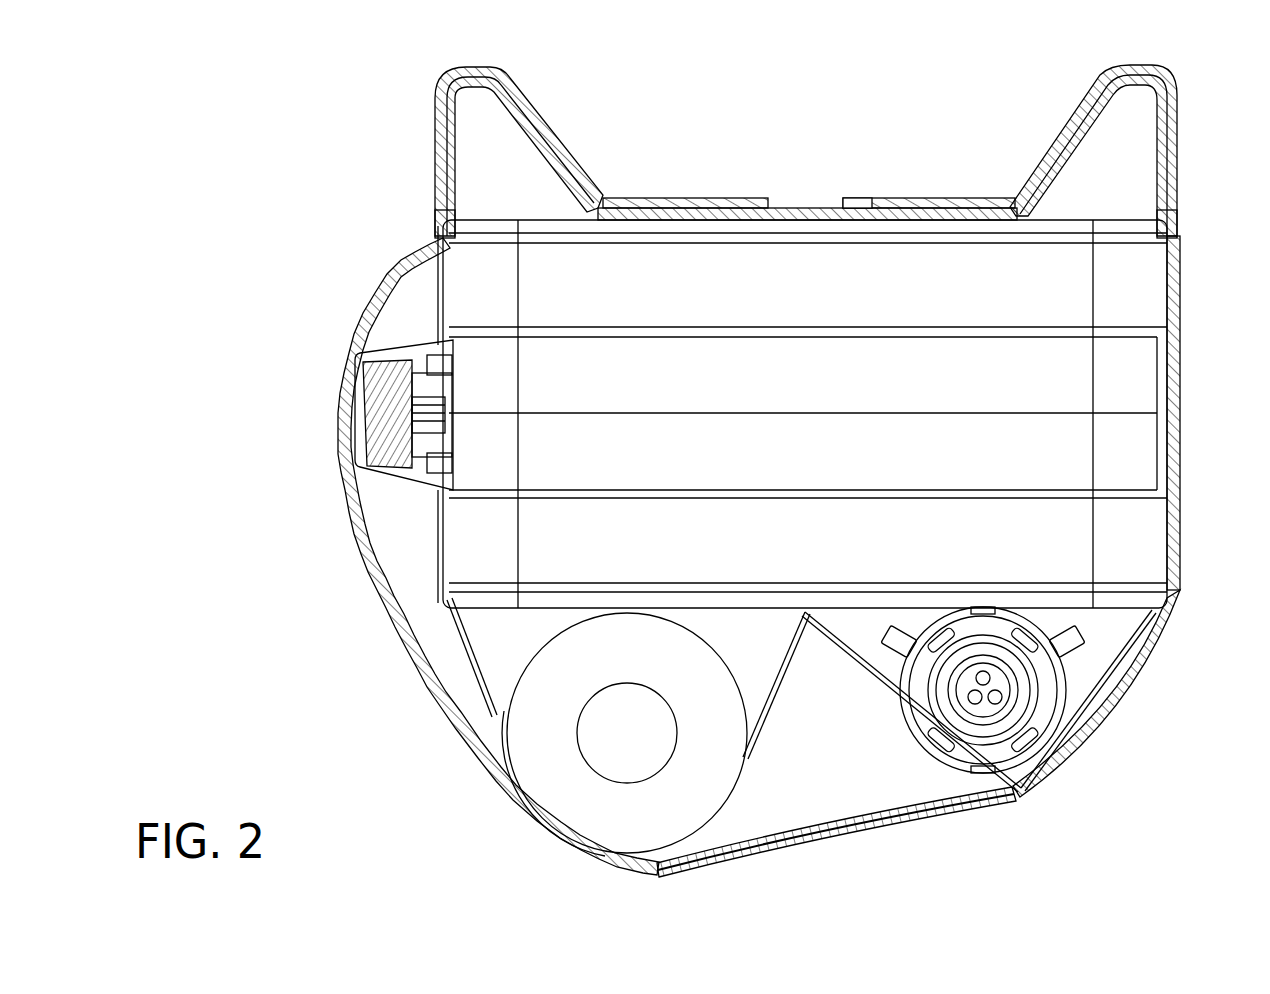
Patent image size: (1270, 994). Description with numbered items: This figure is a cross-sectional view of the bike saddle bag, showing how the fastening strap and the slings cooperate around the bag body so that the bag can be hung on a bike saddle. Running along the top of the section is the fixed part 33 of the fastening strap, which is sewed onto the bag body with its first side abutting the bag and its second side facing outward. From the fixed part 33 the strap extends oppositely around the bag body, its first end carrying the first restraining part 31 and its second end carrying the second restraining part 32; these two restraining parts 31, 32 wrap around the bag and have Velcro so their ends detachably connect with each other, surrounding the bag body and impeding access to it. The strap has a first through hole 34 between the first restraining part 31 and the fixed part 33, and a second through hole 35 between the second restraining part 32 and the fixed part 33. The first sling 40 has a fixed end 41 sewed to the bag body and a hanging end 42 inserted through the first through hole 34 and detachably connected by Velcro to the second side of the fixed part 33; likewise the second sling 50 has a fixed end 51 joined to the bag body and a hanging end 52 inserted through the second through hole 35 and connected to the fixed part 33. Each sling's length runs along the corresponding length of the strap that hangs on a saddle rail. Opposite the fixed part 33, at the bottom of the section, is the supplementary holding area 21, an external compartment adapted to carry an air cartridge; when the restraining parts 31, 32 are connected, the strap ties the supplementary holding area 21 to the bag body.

The supplementary holding area 21 is at (843, 793).
The first restraining part 31 is at (1023, 790).
The second restraining part 32 is at (672, 878).
The fixed part 33 is at (812, 210).
The first through hole 34 is at (436, 222).
The second through hole 35 is at (1178, 222).
The first sling 40 is at (500, 70).
The fixed end 41 is at (442, 248).
The hanging end 42 is at (710, 198).
The second sling 50 is at (1120, 68).
The fixed end 51 is at (1180, 245).
The hanging end 52 is at (903, 199).